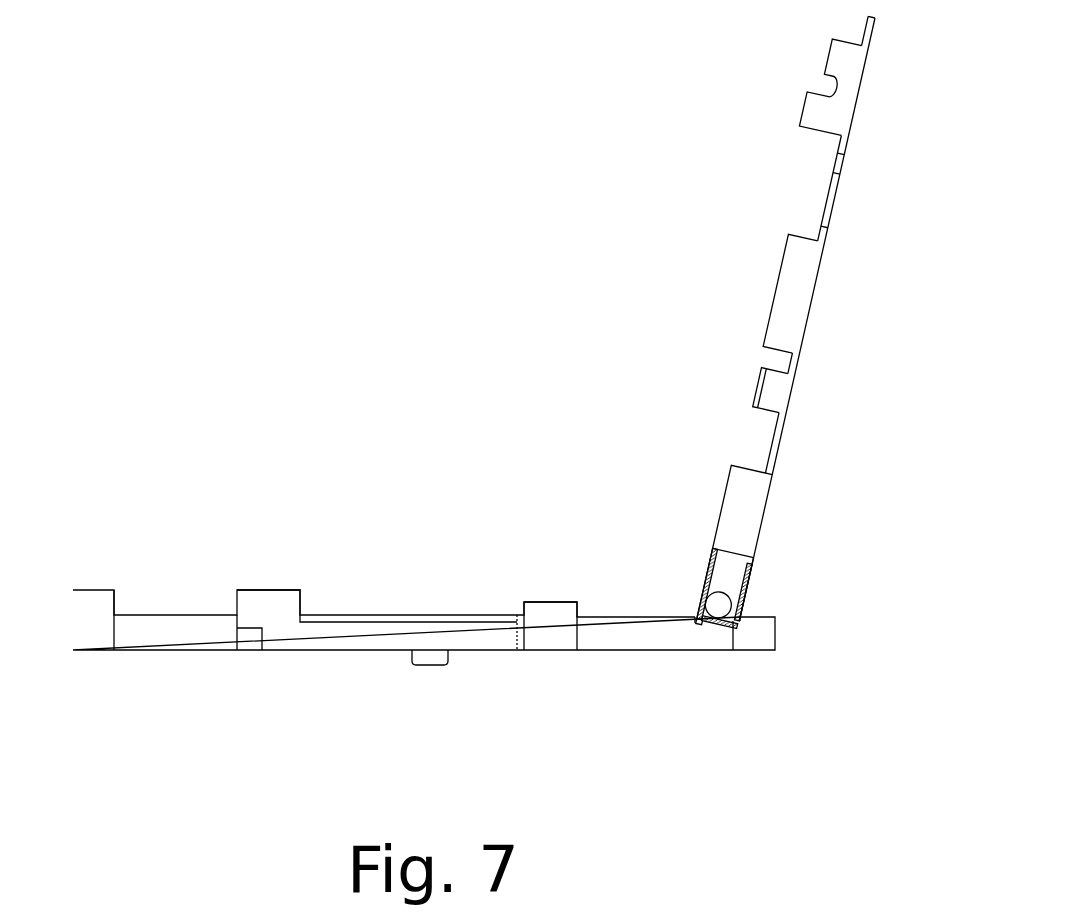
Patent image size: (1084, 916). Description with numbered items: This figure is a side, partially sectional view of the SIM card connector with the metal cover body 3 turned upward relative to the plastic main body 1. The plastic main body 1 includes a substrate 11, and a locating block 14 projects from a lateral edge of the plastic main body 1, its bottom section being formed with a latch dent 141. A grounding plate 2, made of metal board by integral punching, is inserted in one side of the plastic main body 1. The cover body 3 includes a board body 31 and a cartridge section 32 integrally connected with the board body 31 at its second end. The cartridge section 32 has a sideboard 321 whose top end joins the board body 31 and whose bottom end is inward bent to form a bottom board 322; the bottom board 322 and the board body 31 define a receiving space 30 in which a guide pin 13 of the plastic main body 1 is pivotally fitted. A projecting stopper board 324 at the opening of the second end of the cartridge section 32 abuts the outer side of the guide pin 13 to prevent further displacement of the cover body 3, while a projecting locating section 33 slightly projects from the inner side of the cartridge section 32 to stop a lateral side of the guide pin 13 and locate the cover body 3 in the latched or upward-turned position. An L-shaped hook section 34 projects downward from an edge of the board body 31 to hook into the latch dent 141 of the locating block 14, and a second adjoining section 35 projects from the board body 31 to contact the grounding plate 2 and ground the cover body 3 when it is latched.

The plastic main body 1 is at (338, 619).
The substrate 11 is at (148, 623).
The guide pin 13 is at (737, 628).
The locating block 14 is at (287, 633).
The latch dent 141 is at (253, 628).
The grounding plate 2 is at (538, 617).
The cover body 3 is at (765, 300).
The receiving space 30 is at (733, 565).
The board body 31 is at (838, 190).
The cartridge section 32 is at (703, 587).
The sideboard 321 is at (727, 525).
The bottom board 322 is at (659, 590).
The projecting stopper board 324 is at (713, 628).
The projecting locating section 33 is at (718, 588).
The L-shaped hook section 34 is at (805, 114).
The second adjoining section 35 is at (758, 390).